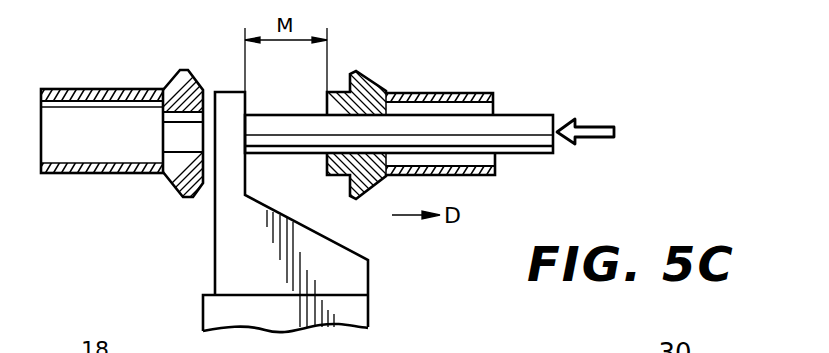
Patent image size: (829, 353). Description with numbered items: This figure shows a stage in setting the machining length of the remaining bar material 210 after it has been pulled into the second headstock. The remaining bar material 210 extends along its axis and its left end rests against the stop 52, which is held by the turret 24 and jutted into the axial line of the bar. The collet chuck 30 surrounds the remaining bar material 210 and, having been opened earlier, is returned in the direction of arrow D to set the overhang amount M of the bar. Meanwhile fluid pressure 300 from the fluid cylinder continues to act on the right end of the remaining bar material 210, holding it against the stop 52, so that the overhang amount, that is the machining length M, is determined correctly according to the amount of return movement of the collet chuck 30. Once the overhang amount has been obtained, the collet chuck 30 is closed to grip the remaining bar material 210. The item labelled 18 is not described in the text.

The tube with flared nut 18 is at (110, 90).
The stop 52 is at (226, 247).
The turret 24 is at (358, 318).
The remaining bar material 210 is at (522, 126).
The collet chuck 30 is at (373, 84).
The fluid pressure 300 is at (592, 120).